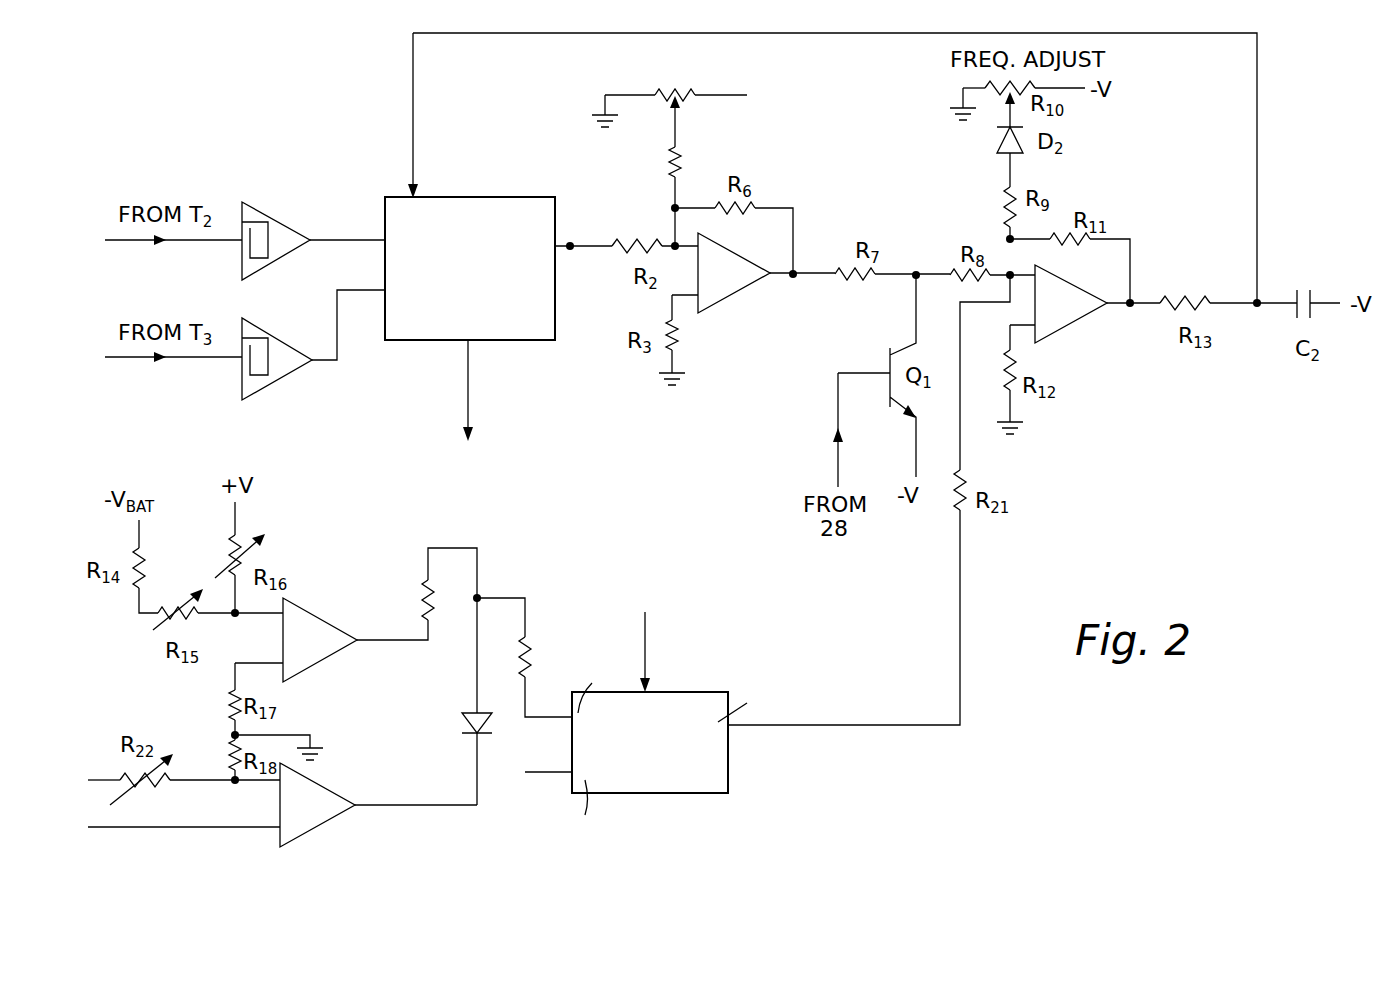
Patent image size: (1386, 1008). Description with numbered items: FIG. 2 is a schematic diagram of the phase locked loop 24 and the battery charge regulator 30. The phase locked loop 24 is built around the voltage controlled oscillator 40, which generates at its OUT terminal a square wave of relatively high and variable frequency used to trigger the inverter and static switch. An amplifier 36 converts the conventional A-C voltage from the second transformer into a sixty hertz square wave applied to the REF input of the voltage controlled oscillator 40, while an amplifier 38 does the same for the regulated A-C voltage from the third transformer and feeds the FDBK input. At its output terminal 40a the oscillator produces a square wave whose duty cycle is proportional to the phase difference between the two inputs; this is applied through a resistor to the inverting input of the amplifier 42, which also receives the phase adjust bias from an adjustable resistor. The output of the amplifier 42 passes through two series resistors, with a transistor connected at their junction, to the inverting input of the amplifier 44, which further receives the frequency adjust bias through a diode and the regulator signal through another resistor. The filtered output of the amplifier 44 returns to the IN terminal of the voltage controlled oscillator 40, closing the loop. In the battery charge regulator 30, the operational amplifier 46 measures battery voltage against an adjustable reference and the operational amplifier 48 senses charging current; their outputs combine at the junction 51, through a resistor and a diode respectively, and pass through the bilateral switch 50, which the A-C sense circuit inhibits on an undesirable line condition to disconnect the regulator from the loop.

The phase locked loop 24 is at (590, 164).
The battery charge regulator 30 is at (464, 695).
The amplifier 36 is at (270, 262).
The amplifier 38 is at (258, 385).
The voltage controlled oscillator 40 is at (520, 340).
The output terminal 40a is at (583, 231).
The amplifier 42 is at (732, 293).
The amplifier 44 is at (1075, 322).
The operational amplifier 46 is at (325, 660).
The operational amplifier 48 is at (320, 822).
The bilateral switch 50 is at (668, 793).
The junction 51 is at (481, 595).